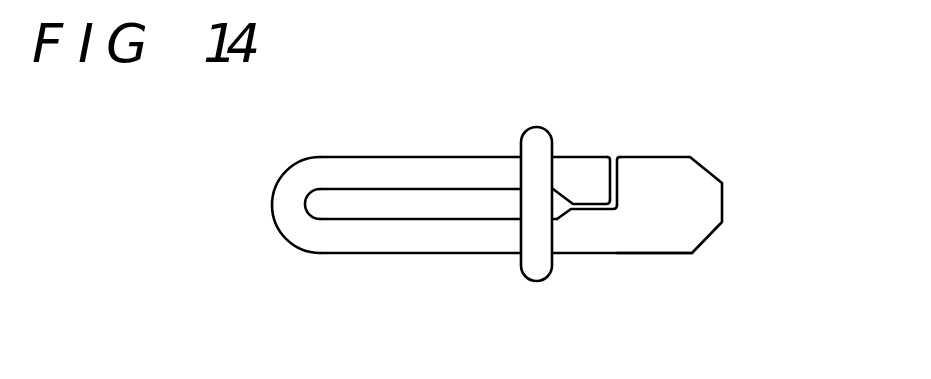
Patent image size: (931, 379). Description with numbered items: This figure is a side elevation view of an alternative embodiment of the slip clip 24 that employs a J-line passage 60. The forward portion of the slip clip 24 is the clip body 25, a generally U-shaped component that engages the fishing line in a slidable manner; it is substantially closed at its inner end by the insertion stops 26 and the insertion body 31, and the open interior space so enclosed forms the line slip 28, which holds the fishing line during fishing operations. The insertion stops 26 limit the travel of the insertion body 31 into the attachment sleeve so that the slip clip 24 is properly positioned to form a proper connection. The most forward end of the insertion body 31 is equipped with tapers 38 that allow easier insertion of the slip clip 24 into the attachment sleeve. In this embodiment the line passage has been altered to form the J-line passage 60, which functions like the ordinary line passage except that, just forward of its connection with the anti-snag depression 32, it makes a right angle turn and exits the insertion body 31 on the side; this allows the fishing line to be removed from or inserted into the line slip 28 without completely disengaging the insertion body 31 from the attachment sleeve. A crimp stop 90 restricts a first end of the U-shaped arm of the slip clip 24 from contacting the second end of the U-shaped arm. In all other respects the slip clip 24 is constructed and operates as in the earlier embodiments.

The slip clip 24 is at (432, 108).
The clip body 25 is at (260, 173).
The insertion stops 26 is at (535, 126).
The line slip 28 is at (305, 207).
The insertion body 31 is at (633, 255).
The anti-snag depression 32 is at (552, 198).
The tapers 38 is at (717, 172).
The J-line passage 60 is at (614, 153).
The crimp stop 90 is at (590, 188).